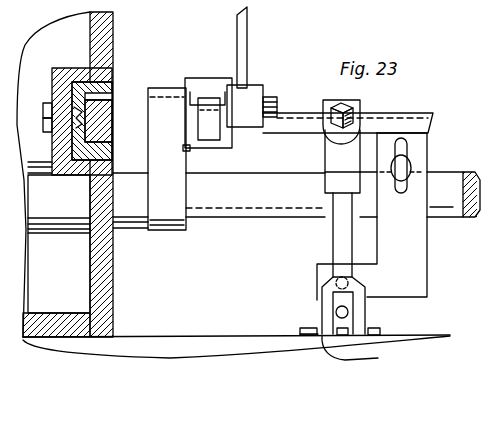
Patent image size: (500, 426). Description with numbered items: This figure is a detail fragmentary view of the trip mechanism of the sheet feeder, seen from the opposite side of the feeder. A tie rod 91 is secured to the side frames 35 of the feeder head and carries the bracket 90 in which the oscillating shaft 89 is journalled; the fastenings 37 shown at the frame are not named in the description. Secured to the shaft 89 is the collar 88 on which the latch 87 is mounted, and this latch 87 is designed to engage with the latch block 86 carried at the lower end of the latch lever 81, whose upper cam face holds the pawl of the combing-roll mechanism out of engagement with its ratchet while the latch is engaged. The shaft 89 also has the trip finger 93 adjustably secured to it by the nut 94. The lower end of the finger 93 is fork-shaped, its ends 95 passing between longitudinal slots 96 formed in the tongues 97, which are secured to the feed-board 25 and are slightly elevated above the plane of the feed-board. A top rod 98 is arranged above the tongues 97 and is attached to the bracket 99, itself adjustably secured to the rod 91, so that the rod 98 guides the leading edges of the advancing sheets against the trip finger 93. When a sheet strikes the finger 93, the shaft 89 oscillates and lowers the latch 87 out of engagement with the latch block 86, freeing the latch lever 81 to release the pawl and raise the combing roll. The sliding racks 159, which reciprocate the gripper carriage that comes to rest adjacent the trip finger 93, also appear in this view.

The feed-board 25 is at (245, 328).
The side frames 35 is at (115, 280).
The fastening bolts 37 is at (128, 137).
The latch lever 81 is at (248, 28).
The latch block 86 is at (212, 93).
The latch 87 is at (200, 97).
The collar 88 is at (190, 78).
The oscillating shaft 89 is at (426, 114).
The bracket 90 is at (188, 162).
The tie rod 91 is at (233, 220).
The trip finger 93 is at (333, 242).
The nut 94 is at (340, 100).
The fork ends 95 is at (366, 317).
The longitudinal slots 96 is at (363, 351).
The tongues 97 is at (300, 328).
The top rod 98 is at (350, 310).
The bracket 99 is at (412, 248).
The sliding racks 159 is at (115, 82).